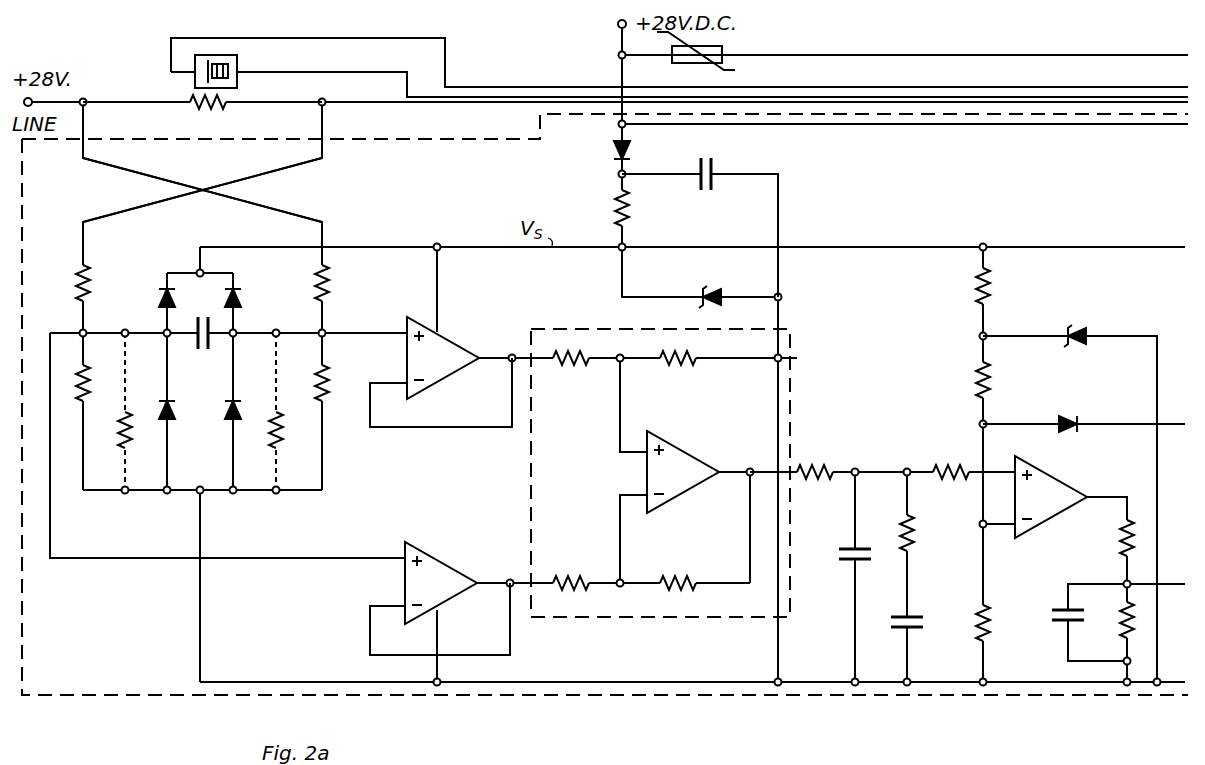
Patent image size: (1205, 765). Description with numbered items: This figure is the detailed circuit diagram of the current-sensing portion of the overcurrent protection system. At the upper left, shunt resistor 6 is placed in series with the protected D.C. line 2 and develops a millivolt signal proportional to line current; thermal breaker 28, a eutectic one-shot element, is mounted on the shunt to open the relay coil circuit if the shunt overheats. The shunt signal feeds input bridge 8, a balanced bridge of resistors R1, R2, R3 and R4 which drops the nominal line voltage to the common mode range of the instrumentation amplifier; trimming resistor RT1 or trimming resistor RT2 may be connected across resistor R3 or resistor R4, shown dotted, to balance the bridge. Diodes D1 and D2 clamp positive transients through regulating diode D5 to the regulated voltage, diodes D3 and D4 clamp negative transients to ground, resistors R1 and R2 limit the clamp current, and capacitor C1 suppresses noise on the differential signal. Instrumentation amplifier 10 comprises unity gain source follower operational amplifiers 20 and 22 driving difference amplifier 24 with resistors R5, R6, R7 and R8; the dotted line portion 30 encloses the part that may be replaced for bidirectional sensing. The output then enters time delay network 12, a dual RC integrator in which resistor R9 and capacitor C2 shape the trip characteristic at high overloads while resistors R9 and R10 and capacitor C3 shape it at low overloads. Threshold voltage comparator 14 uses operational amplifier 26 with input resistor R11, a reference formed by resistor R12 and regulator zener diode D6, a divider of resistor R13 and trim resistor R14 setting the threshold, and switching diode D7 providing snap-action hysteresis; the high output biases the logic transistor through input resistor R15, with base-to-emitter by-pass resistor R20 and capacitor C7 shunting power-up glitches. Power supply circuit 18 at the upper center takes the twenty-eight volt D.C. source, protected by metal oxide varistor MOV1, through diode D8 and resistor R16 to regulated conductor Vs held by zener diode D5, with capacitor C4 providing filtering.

The line 2 is at (134, 99).
The shunt resistor 6 is at (220, 110).
The input bridge 8 is at (202, 201).
The instrumentation amplifier 10 is at (441, 506).
The time delay network 12 is at (827, 436).
The threshold voltage comparator 14 is at (1021, 380).
The power supply circuit 18 is at (712, 219).
The operational amplifier 20 is at (450, 355).
The operational amplifier 22 is at (448, 575).
The difference amplifier 24 is at (688, 470).
The operational amplifier 26 is at (1056, 500).
The thermal breaker 28 is at (237, 65).
The dotted line portion 30 is at (800, 355).
The metal oxide varistor MOV1 is at (728, 52).
The resistor R1 is at (91, 290).
The resistor R2 is at (331, 294).
The resistor R3 is at (92, 395).
The resistor R4 is at (331, 380).
The resistor R5 is at (573, 368).
The resistor R6 is at (578, 578).
The resistor R7 is at (682, 578).
The resistor R8 is at (681, 368).
The resistor R9 is at (818, 466).
The resistor R10 is at (914, 528).
The input resistor R11 is at (953, 469).
The resistor R12 is at (979, 282).
The resistor R13 is at (979, 367).
The trim resistor R14 is at (990, 624).
The input resistor R15 is at (1119, 541).
The resistor R16 is at (634, 212).
The base-to-emitter by-pass resistor R20 is at (1118, 622).
The trimming resistor RT1 is at (116, 439).
The trimming resistor RT2 is at (270, 439).
The capacitor C1 is at (211, 362).
The capacitor C2 is at (873, 560).
The capacitor C3 is at (936, 624).
The capacitor C4 is at (714, 174).
The capacitor C7 is at (1060, 612).
The diode D1 is at (159, 300).
The diode D2 is at (242, 298).
The diode D3 is at (175, 411).
The diode D4 is at (224, 410).
The regulating diode D5 is at (717, 288).
The regulator zener diode D6 is at (1076, 326).
The switching diode D7 is at (1072, 420).
The diode D8 is at (634, 148).